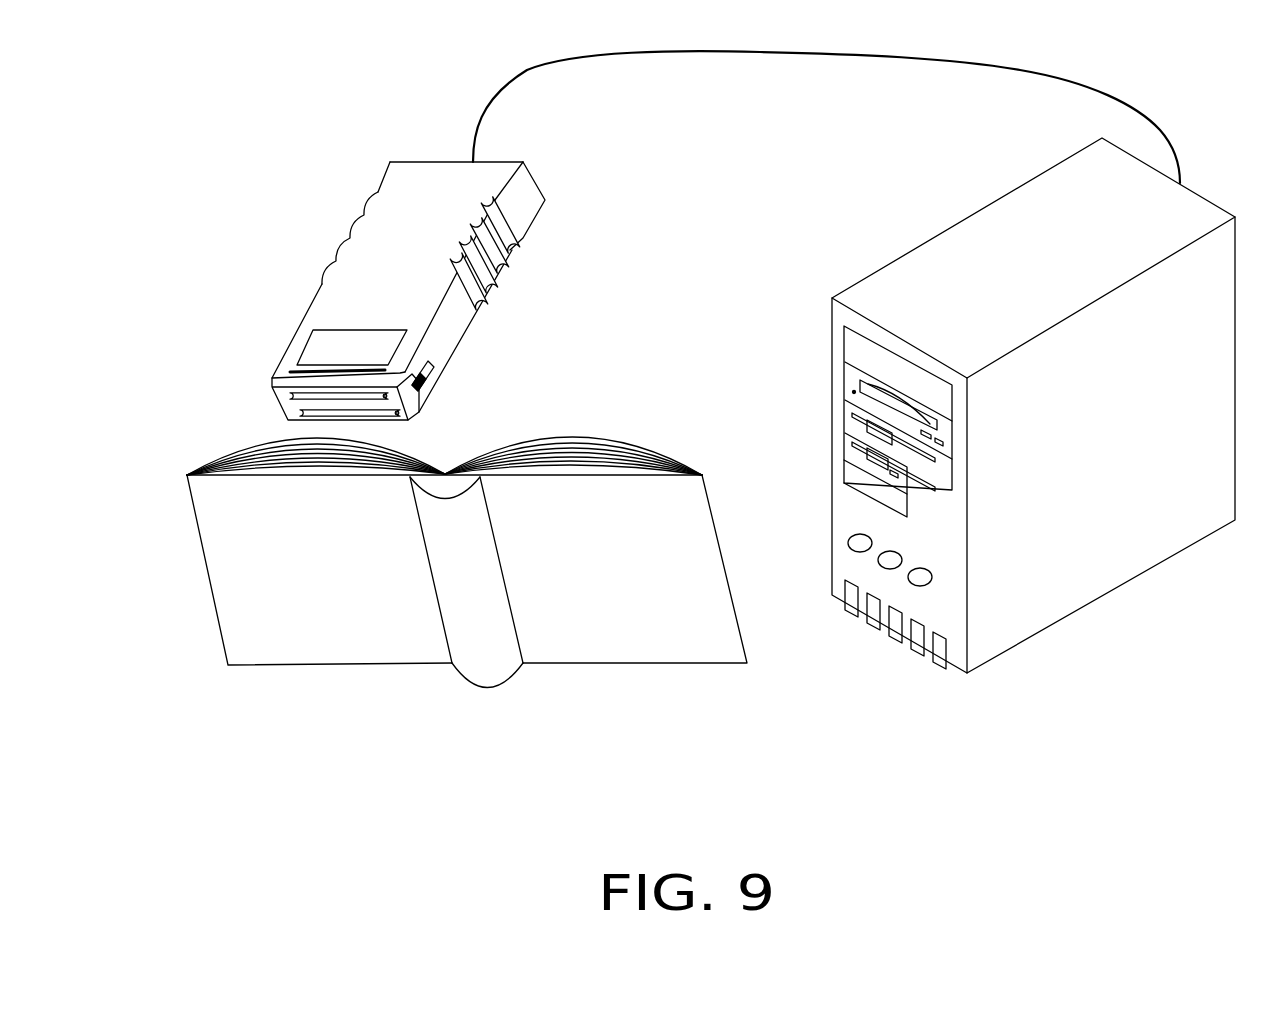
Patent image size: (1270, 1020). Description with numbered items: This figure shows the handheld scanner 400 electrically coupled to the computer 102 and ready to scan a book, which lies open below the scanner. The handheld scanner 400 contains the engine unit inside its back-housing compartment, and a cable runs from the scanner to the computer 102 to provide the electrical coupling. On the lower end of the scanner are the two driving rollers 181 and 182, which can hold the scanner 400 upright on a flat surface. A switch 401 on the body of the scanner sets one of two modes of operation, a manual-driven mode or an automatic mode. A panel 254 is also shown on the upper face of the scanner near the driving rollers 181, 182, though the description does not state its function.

The handheld scanner 400 is at (395, 188).
The display 254 is at (333, 342).
The switch 401 is at (435, 368).
The driving roller 182 is at (404, 384).
The driving roller 181 is at (410, 422).
The computer 102 is at (1052, 215).